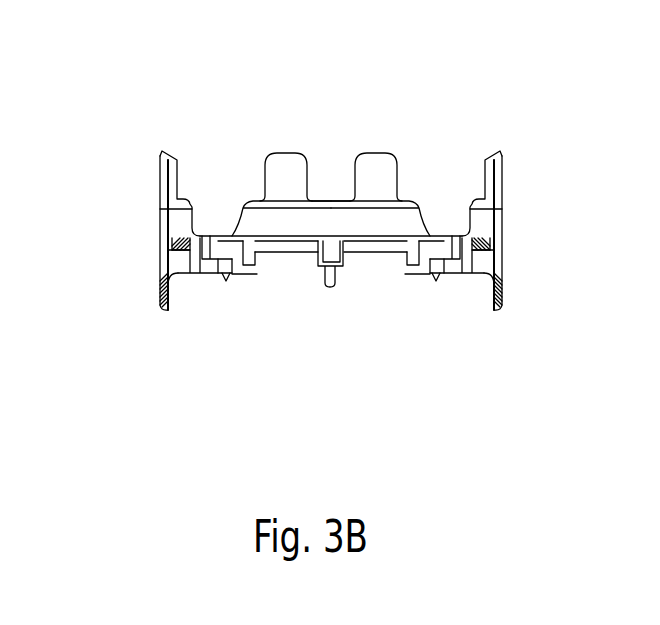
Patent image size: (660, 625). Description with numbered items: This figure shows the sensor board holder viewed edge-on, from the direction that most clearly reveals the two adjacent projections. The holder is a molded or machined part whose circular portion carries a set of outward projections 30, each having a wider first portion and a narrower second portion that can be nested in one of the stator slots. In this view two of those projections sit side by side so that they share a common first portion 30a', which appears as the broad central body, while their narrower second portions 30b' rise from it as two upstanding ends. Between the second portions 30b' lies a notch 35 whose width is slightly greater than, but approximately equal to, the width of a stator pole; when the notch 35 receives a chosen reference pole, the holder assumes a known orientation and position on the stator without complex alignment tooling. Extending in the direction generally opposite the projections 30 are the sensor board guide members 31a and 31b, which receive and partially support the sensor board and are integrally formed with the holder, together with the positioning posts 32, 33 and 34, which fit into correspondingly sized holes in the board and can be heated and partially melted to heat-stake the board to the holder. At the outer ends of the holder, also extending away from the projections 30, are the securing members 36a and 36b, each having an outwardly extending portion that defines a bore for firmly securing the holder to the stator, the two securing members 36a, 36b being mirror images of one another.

The outward projection 30 is at (163, 158).
The common first portion 30a' is at (331, 161).
The second portion of adjacent projection 30b' is at (365, 114).
The notch 35 is at (321, 178).
The securing member 36a is at (162, 307).
The securing member 36b is at (500, 308).
The sensor board guide member 31a is at (218, 277).
The sensor board guide member 31b is at (440, 278).
The positioning post 33 is at (227, 278).
The positioning post 34 is at (435, 282).
The positioning post 32 is at (331, 290).